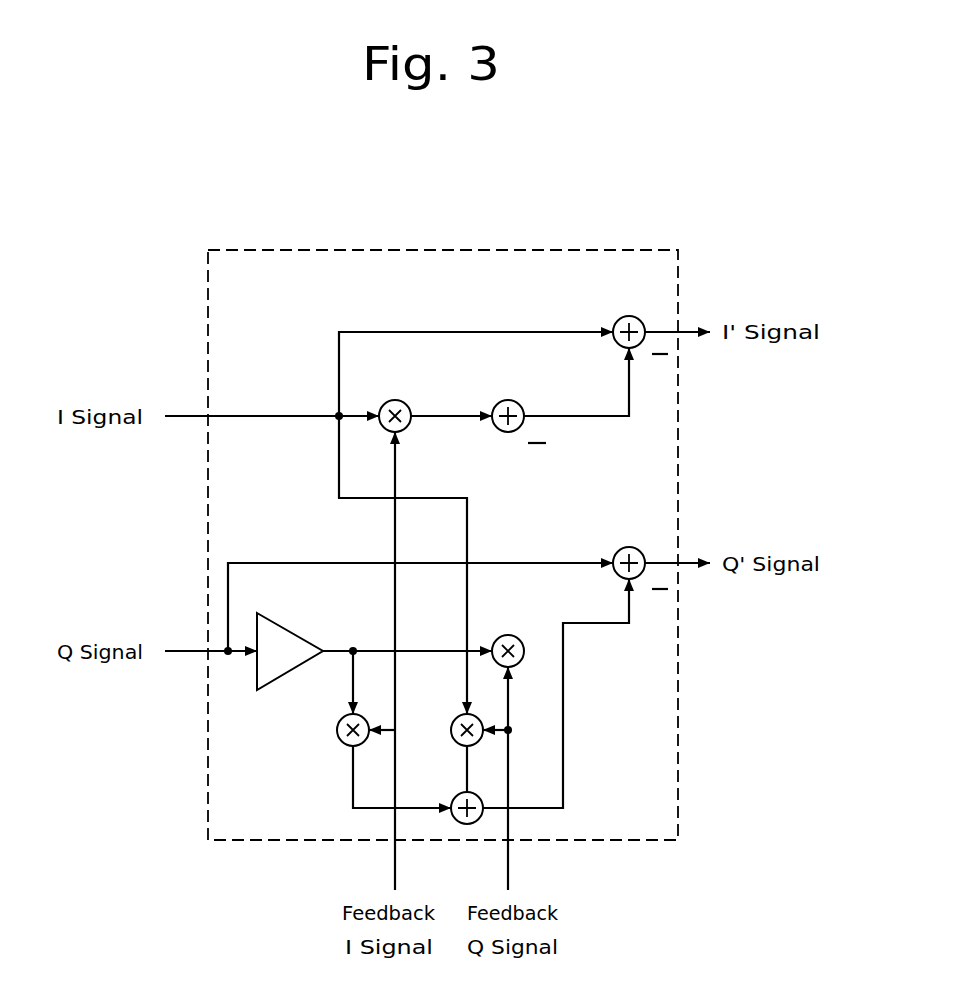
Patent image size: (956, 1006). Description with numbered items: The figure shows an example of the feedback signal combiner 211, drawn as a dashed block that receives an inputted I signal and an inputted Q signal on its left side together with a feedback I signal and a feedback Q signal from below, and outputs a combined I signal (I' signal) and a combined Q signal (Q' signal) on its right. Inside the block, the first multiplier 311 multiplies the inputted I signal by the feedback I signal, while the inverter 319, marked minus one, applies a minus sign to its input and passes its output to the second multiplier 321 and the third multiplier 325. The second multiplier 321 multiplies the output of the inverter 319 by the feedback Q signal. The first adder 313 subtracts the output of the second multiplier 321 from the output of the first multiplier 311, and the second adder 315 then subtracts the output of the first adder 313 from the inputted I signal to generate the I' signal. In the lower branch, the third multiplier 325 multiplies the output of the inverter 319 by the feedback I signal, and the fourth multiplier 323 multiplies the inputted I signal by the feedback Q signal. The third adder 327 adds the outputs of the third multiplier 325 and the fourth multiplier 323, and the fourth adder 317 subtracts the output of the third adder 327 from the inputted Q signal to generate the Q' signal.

The feedback signal combiner 211 is at (512, 250).
The first multiplier 311 is at (397, 400).
The first adder 313 is at (510, 400).
The second adder 315 is at (631, 316).
The fourth adder 317 is at (631, 547).
The inverter 319 is at (290, 629).
The second multiplier 321 is at (520, 638).
The fourth multiplier 323 is at (455, 718).
The third multiplier 325 is at (337, 730).
The third adder 327 is at (455, 798).